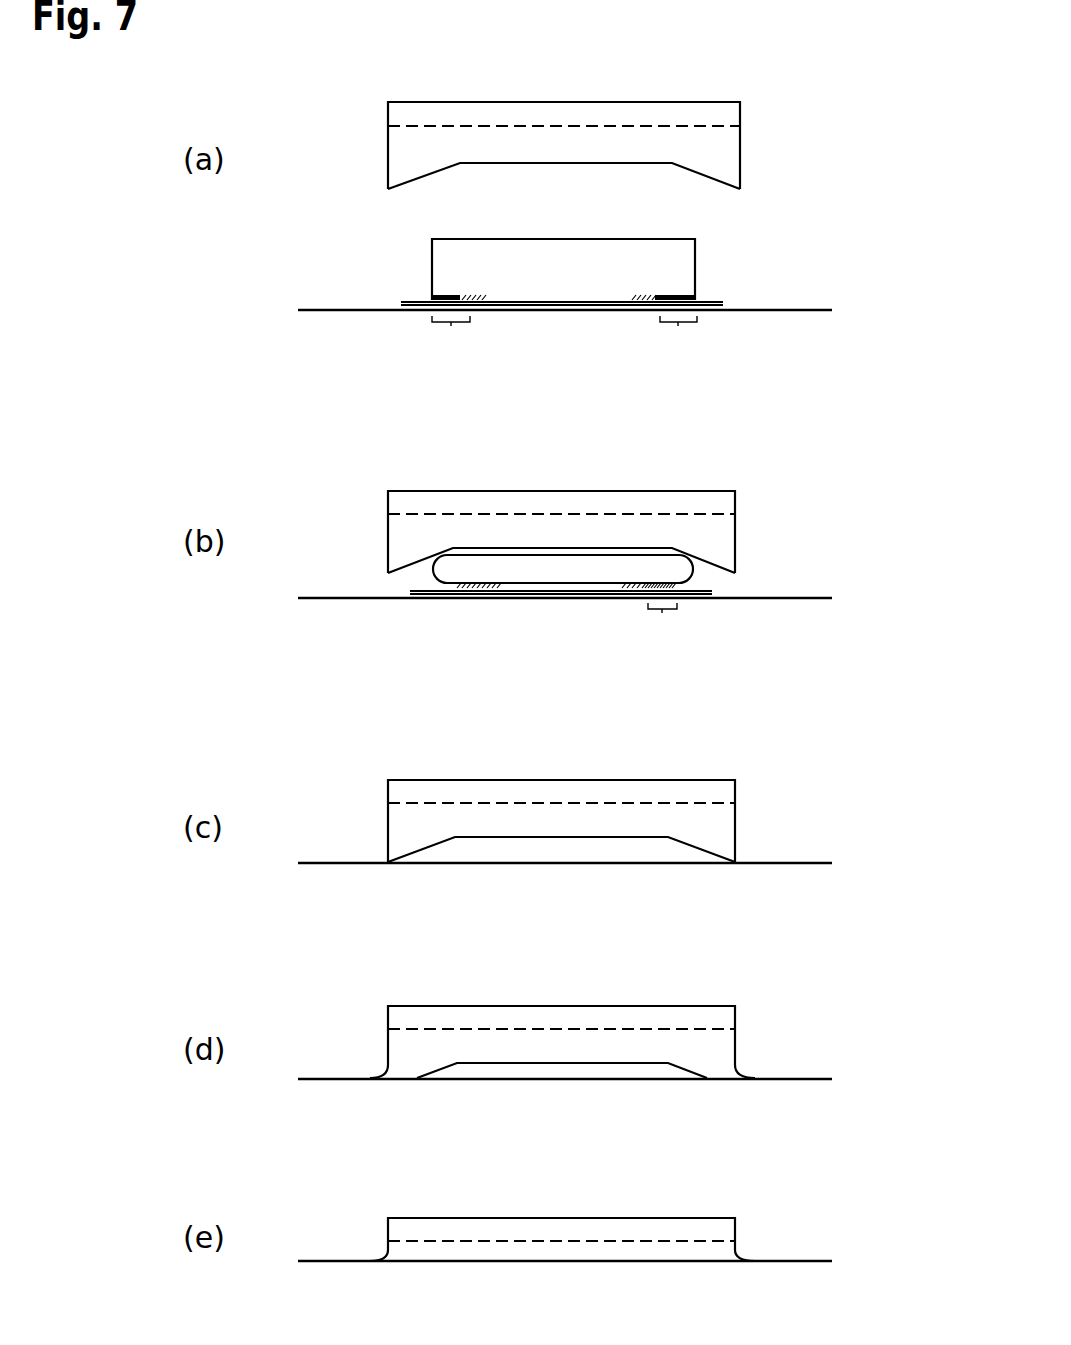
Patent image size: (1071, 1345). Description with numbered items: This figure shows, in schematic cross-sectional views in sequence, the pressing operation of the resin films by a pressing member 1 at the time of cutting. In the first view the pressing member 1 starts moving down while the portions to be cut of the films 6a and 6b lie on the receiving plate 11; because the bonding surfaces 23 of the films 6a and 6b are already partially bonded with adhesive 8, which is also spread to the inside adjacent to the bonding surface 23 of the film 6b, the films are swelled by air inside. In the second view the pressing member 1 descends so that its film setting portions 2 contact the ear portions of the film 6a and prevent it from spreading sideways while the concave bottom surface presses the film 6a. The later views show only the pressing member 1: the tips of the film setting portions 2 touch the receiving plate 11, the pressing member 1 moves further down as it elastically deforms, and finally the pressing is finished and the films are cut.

The pressing member 1 is at (604, 143).
The film setting portions 2 is at (400, 174).
The film 6a is at (697, 246).
The film 6b is at (710, 301).
The adhesive 8 is at (650, 300).
The receiving plate 11 is at (792, 312).
The bonding surfaces 23 is at (451, 333).